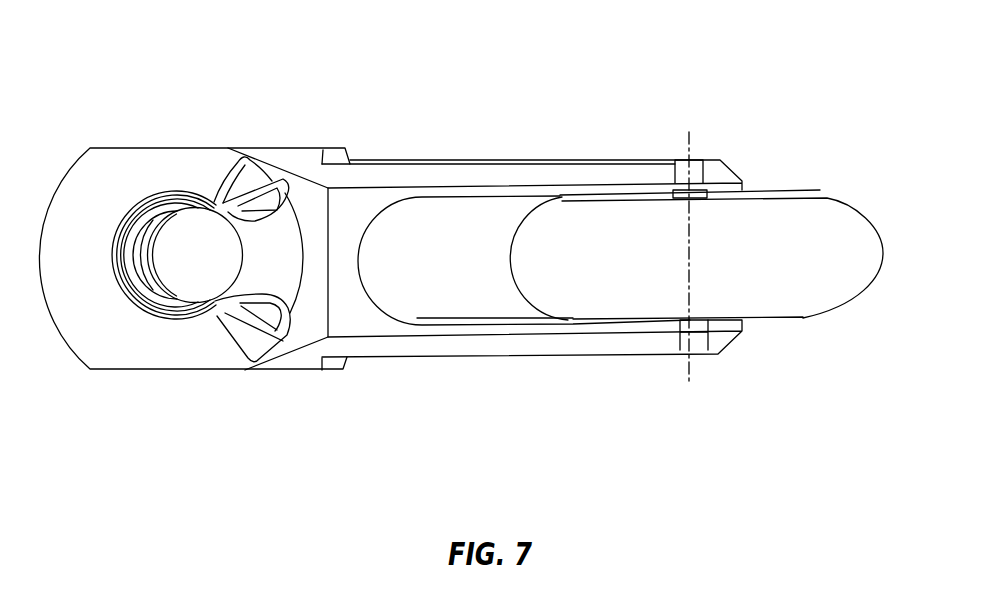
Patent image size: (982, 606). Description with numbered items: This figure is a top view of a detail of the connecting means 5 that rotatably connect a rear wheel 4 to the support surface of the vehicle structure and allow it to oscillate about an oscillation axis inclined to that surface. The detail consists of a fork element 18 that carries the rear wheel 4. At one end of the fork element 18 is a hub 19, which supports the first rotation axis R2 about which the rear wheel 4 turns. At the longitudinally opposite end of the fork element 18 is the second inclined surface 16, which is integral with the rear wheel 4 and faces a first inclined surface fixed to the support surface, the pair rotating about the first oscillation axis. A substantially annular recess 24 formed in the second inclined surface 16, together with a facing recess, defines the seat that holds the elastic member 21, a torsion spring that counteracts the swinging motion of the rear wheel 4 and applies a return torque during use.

The connecting means 5 is at (225, 95).
The second inclined surface 16 is at (143, 177).
The recess 24 is at (254, 173).
The elastic member 21 is at (287, 338).
The fork element 18 is at (403, 159).
The hub 19 is at (675, 160).
The first rotation axis R2 is at (690, 140).
The rear wheel 4 is at (837, 192).